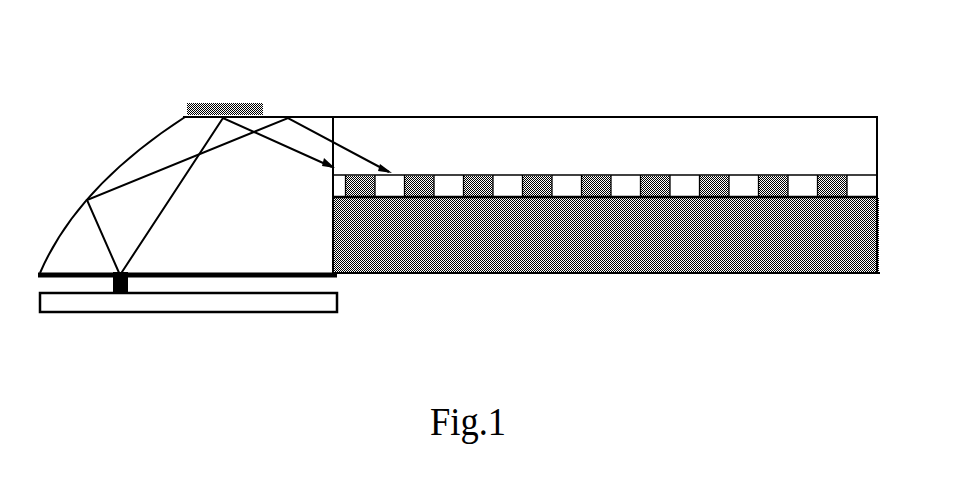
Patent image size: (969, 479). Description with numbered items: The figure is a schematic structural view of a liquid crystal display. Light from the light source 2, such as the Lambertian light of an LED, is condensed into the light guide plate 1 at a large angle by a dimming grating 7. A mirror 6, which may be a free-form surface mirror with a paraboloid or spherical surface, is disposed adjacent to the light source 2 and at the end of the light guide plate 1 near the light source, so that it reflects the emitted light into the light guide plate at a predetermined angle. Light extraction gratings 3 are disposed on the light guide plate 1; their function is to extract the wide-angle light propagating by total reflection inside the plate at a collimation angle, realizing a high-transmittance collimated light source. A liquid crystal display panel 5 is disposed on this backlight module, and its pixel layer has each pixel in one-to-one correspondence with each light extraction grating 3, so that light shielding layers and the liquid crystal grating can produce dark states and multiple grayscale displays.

The light guide plate 1 is at (605, 195).
The light source 2 is at (203, 322).
The light extraction grating 3 is at (840, 192).
The liquid crystal display panel 5 is at (853, 255).
The mirror 6 is at (108, 174).
The dimming grating 7 is at (225, 105).